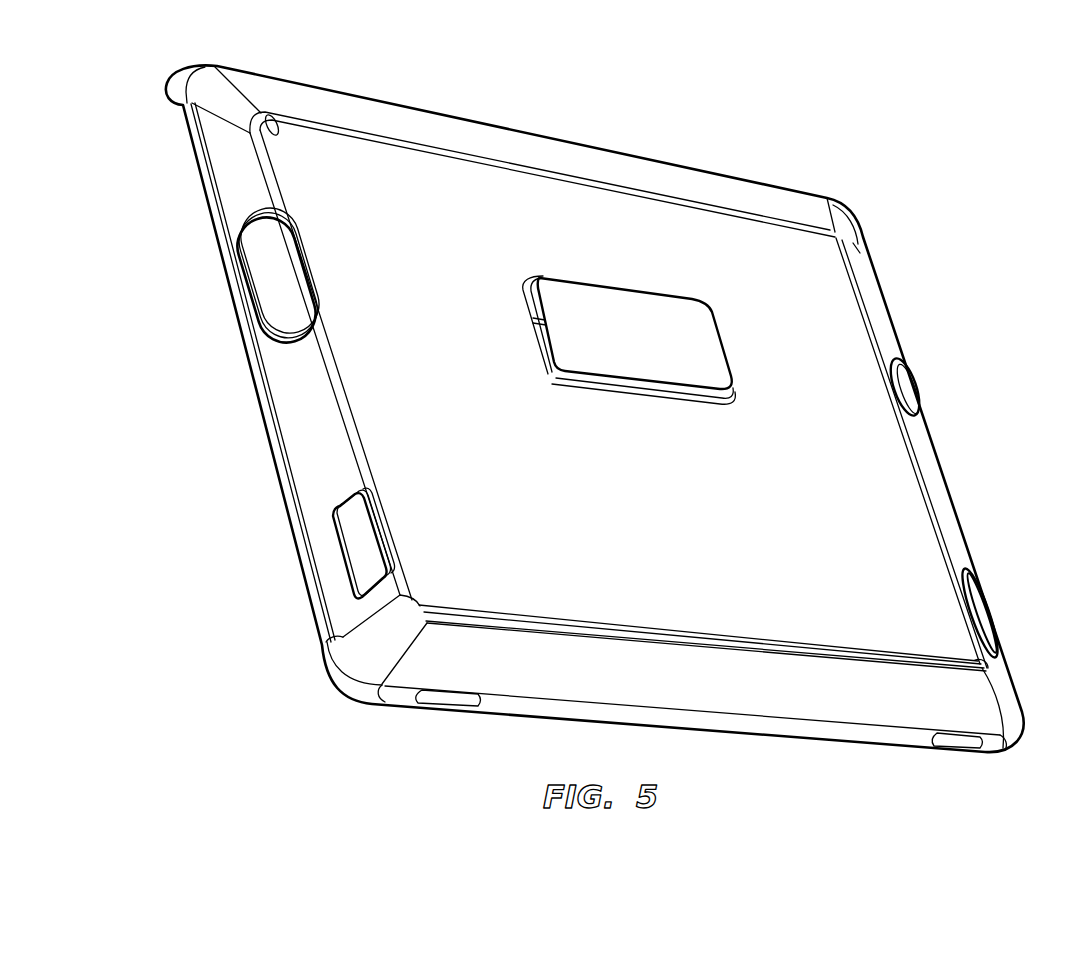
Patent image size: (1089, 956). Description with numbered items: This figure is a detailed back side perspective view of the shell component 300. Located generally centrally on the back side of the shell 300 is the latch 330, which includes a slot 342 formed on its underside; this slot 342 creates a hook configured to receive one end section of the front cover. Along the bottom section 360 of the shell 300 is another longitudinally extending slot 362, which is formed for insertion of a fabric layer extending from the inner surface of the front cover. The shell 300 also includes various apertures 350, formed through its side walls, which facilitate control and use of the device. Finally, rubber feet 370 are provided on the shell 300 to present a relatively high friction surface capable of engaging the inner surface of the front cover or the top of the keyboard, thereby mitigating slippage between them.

The shell component 300 is at (595, 408).
The latch 330 is at (603, 307).
The slot 342 is at (548, 368).
The apertures 350 is at (264, 287).
The bottom section 360 is at (943, 490).
The longitudinally extending slot 362 is at (830, 648).
The rubber feet 370 is at (448, 704).